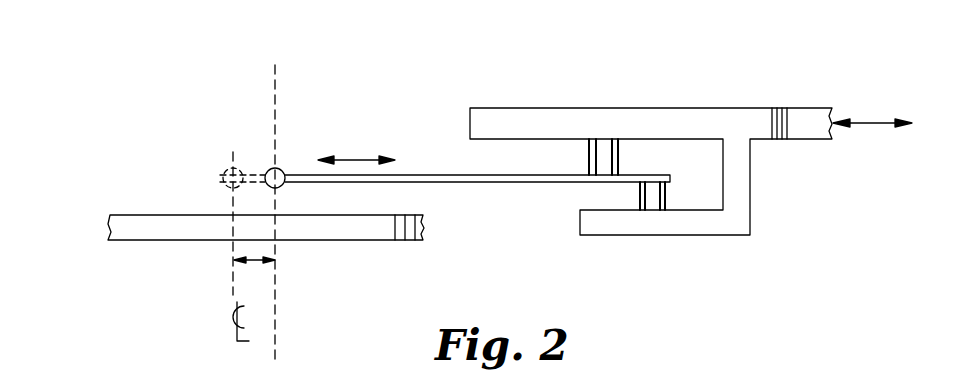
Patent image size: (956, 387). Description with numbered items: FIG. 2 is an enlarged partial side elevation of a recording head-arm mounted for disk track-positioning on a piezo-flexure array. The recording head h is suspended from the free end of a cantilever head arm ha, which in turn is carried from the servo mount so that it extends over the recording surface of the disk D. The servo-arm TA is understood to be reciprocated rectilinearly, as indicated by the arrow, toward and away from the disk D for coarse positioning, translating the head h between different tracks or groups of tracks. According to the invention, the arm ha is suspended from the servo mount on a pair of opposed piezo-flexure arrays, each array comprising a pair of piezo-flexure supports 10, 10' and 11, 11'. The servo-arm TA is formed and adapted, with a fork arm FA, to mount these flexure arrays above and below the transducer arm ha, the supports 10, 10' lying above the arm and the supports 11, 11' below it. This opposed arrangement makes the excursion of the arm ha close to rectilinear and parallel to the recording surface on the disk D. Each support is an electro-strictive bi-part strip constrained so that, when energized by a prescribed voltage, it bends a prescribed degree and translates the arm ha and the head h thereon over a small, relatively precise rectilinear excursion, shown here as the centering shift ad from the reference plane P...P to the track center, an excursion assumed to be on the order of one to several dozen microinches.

The pivot plane P is at (274, 207).
The head h is at (268, 169).
The head arm ha is at (442, 175).
The disk D is at (108, 237).
The shift ad is at (277, 258).
The servo-arm TA is at (770, 108).
The fork arm FA is at (752, 216).
The piezo-flexure support 10 is at (558, 157).
The piezo-flexure support 10' is at (651, 157).
The piezo-flexure support 11 is at (596, 198).
The piezo-flexure support 11' is at (694, 190).